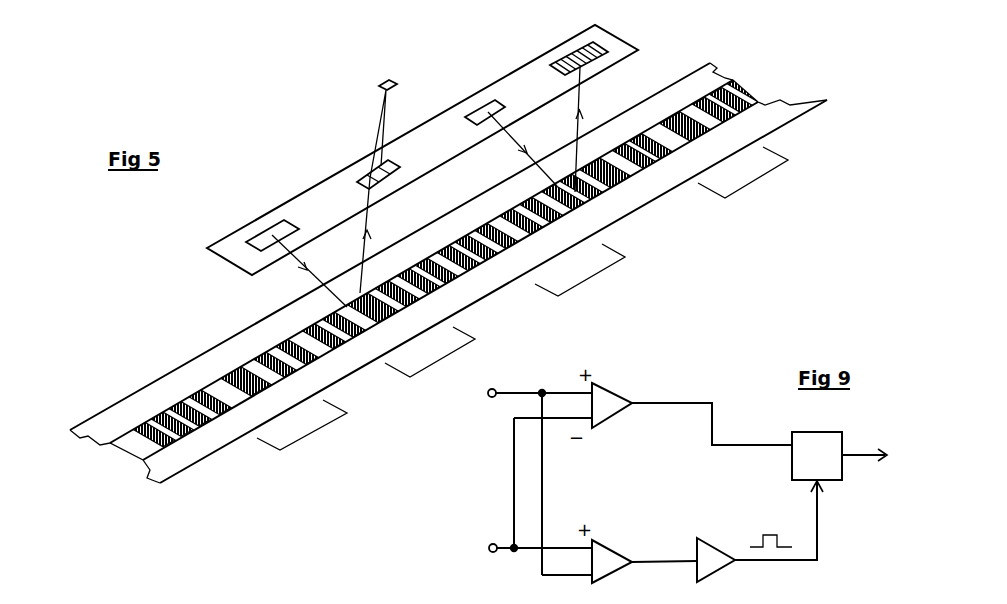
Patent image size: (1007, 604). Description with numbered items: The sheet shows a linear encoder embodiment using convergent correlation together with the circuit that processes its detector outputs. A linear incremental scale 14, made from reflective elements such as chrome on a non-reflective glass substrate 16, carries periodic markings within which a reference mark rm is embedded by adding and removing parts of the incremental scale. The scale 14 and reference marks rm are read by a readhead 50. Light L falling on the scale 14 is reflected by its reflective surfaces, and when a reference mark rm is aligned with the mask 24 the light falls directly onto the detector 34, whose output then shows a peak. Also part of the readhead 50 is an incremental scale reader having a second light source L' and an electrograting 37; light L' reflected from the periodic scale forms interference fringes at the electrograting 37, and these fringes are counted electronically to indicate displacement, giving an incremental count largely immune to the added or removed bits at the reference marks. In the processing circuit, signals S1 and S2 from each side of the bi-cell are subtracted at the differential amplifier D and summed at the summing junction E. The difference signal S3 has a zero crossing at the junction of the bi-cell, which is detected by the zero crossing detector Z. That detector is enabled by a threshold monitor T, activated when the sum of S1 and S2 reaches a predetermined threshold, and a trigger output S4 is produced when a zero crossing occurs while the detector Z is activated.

In FIG. 5, the readhead 50 is at (417, 159).
In FIG. 5, the detector 34 is at (388, 80).
In FIG. 5, the mask 24 is at (365, 178).
In FIG. 5, the electrograting 37 is at (577, 52).
In FIG. 5, the linear incremental scale 14 is at (277, 348).
In FIG. 5, the substrate 16 is at (158, 393).
In FIG. 5, the light L is at (287, 246).
In FIG. 5, the second light source L' is at (509, 119).
In FIG. 5, the reference mark rm is at (522, 298).
In FIG. 9, the signal S1 is at (474, 395).
In FIG. 9, the signal S2 is at (475, 549).
In FIG. 9, the signal S3 is at (673, 402).
In FIG. 9, the trigger output S4 is at (858, 452).
In FIG. 9, the differential amplifier D is at (602, 408).
In FIG. 9, the summing junction E is at (607, 560).
In FIG. 9, the threshold monitor T is at (710, 542).
In FIG. 9, the zero crossing detector Z is at (817, 456).